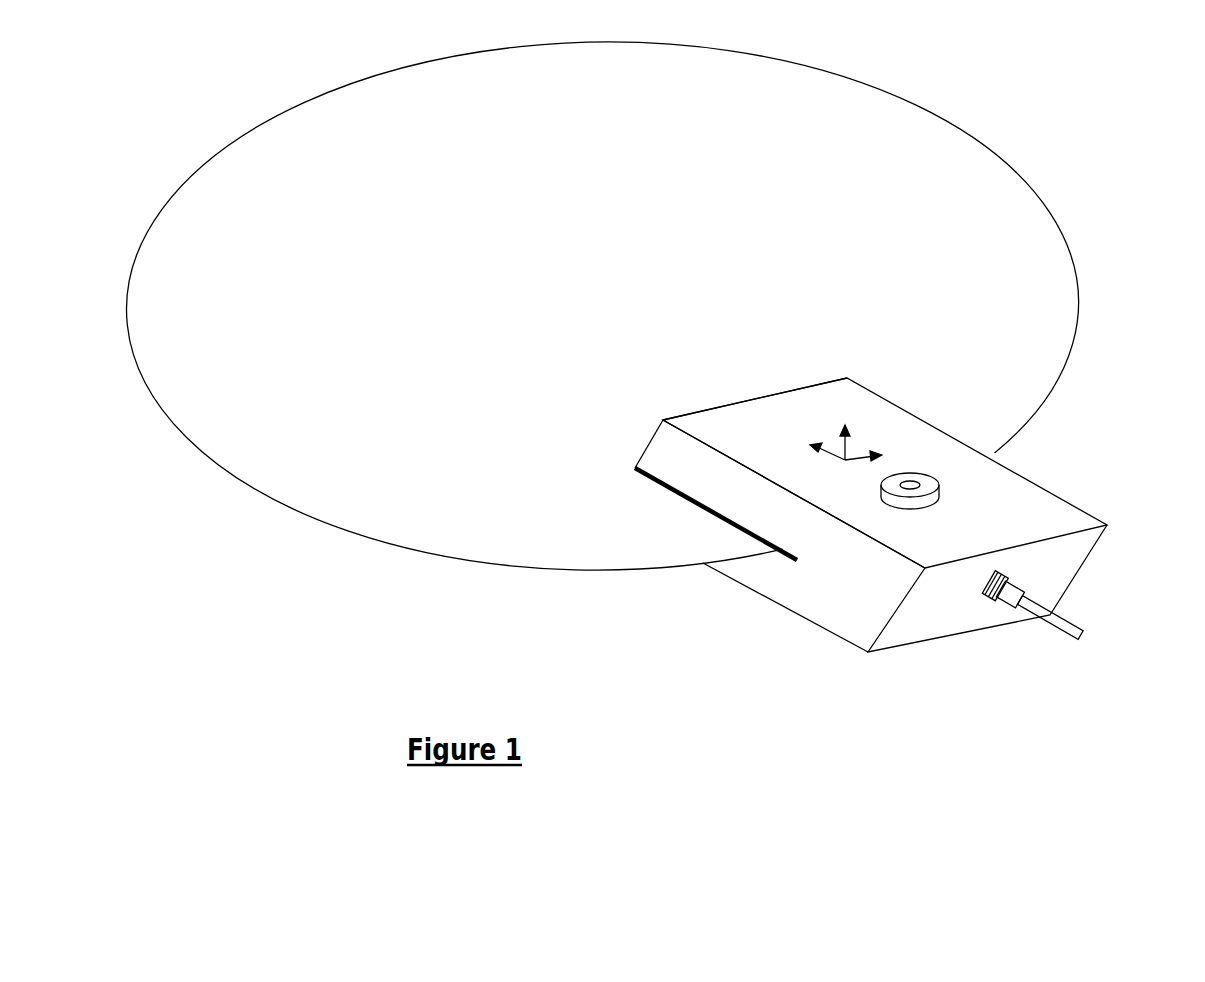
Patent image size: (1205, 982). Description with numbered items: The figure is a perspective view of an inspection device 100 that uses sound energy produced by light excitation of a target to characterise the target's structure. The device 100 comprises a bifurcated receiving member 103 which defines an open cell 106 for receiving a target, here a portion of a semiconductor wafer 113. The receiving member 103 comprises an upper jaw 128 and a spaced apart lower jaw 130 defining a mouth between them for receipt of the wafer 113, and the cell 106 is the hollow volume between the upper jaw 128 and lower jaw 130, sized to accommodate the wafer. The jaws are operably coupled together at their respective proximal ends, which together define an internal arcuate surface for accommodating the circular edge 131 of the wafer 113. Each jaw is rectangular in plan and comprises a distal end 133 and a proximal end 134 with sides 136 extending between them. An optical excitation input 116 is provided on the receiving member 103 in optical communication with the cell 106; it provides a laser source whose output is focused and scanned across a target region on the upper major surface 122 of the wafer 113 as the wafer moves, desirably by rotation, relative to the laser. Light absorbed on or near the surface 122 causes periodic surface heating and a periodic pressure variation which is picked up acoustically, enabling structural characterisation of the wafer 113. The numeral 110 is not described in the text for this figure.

The inspection device 100 is at (1008, 102).
The bifurcated receiving member 103 is at (1047, 520).
The open cell 106 is at (793, 557).
The disc edge 110 is at (673, 568).
The semiconductor wafer 113 is at (750, 78).
The optical excitation input 116 is at (913, 490).
The upper major surface 122 is at (260, 223).
The upper jaw 128 is at (903, 433).
The lower jaw 130 is at (732, 577).
The circular edge 131 is at (1047, 203).
The distal end 133 is at (768, 392).
The proximal end 134 is at (1065, 558).
The sides 136 is at (683, 472).